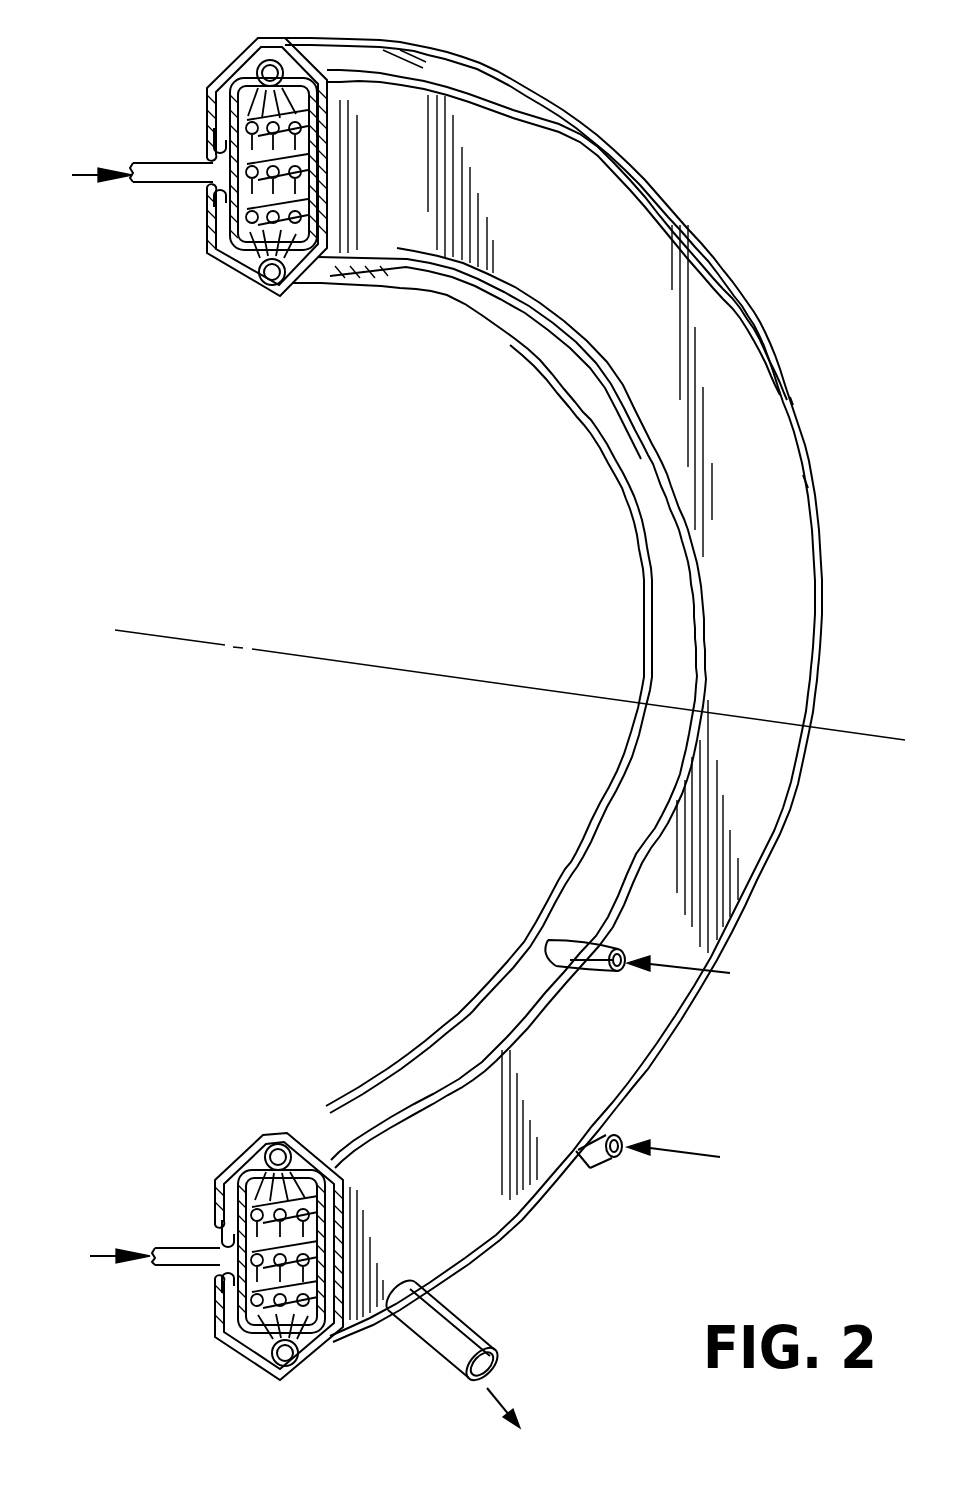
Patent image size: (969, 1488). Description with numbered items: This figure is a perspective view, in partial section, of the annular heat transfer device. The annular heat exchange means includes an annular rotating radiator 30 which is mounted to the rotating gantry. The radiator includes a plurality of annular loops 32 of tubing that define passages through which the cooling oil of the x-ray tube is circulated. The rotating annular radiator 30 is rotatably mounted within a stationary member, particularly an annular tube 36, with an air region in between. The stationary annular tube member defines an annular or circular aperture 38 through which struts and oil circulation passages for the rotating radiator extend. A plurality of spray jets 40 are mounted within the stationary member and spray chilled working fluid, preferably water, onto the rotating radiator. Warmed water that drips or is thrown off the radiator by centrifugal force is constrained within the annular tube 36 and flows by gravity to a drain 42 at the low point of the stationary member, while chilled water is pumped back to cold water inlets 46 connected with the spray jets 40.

The annular rotating radiator 30 is at (252, 1340).
The annular loops of tubing 32 is at (330, 1195).
The annular tube 36 is at (779, 558).
The annular aperture 38 is at (195, 191).
The spray jets 40 is at (250, 90).
The drain 42 is at (450, 1332).
The cold water inlets 46 is at (577, 952).